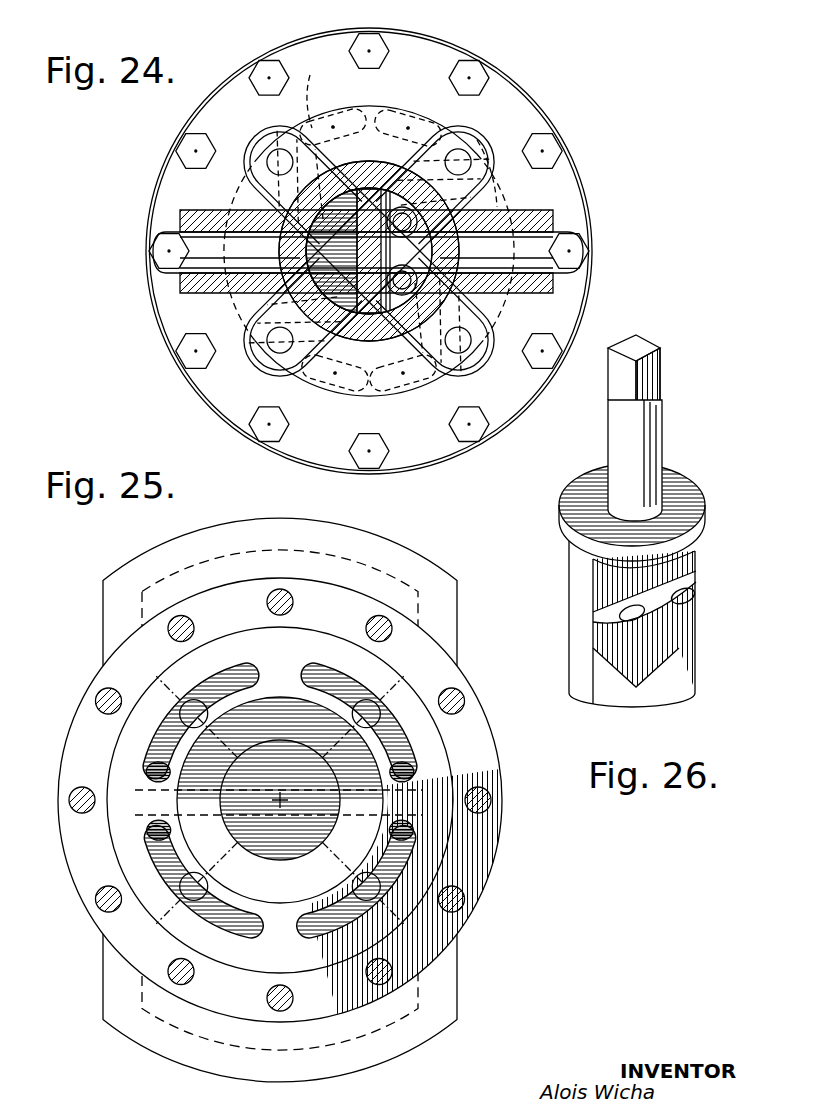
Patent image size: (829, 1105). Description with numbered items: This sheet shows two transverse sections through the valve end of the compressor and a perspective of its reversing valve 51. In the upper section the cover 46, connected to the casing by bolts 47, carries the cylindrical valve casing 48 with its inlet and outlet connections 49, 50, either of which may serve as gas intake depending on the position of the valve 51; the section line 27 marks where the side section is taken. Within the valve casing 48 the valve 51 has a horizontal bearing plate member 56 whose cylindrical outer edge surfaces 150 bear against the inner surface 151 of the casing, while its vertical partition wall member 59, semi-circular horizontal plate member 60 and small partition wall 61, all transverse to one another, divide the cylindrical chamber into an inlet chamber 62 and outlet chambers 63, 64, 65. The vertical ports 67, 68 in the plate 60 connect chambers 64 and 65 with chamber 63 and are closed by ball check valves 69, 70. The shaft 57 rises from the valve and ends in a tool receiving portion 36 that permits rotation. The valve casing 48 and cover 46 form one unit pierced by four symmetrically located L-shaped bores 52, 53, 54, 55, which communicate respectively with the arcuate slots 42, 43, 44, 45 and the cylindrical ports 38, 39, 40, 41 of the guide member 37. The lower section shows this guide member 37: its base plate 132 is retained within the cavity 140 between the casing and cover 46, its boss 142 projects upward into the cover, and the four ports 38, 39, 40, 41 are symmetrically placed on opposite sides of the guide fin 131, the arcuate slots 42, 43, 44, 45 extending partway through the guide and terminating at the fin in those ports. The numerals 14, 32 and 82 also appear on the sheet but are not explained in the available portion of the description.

In FIG. 25, the housing 14 is at (443, 970).
In FIG. 24, the section line 27 is at (228, 100).
In FIG. 24, the rotor plate 32 is at (298, 332).
In FIG. 26, the tool receiving portion 36 is at (655, 366).
In FIG. 25, the guide member 37 is at (433, 757).
In FIG. 25, the cylindrical port 38 is at (146, 833).
In FIG. 25, the cylindrical port 39 is at (145, 773).
In FIG. 25, the cylindrical port 40 is at (415, 774).
In FIG. 25, the cylindrical port 41 is at (415, 833).
In FIG. 24, the arcuate slot 42 is at (262, 302).
In FIG. 25, the arcuate slot 42 is at (222, 917).
In FIG. 24, the arcuate slot 43 is at (312, 88).
In FIG. 25, the arcuate slot 43 is at (243, 676).
In FIG. 24, the arcuate slot 44 is at (492, 205).
In FIG. 25, the arcuate slot 44 is at (392, 738).
In FIG. 24, the arcuate slot 45 is at (487, 305).
In FIG. 25, the arcuate slot 45 is at (317, 922).
In FIG. 24, the cover 46 is at (513, 100).
In FIG. 24, the bolts 47 is at (392, 48).
In FIG. 25, the bolts 47 is at (385, 617).
In FIG. 24, the valve casing 48 is at (372, 385).
In FIG. 24, the inlet and outlet connection 49 is at (197, 262).
In FIG. 24, the inlet and outlet connection 50 is at (548, 240).
In FIG. 24, the reversing valve 51 is at (303, 252).
In FIG. 26, the reversing valve 51 is at (572, 594).
In FIG. 25, the L-shaped bore 52 is at (233, 873).
In FIG. 24, the L-shaped bore 53 is at (274, 130).
In FIG. 25, the L-shaped bore 53 is at (235, 735).
In FIG. 24, the L-shaped bore 54 is at (412, 148).
In FIG. 25, the L-shaped bore 54 is at (330, 737).
In FIG. 24, the L-shaped bore 55 is at (409, 331).
In FIG. 25, the L-shaped bore 55 is at (322, 856).
In FIG. 26, the bearing plate member 56 is at (697, 510).
In FIG. 26, the shaft 57 is at (652, 440).
In FIG. 24, the vertical partition wall member 59 is at (360, 187).
In FIG. 26, the vertical partition wall member 59 is at (578, 618).
In FIG. 26, the semi-circular horizontal plate member 60 is at (698, 628).
In FIG. 26, the partition wall 61 is at (697, 688).
In FIG. 24, the inlet chamber 62 is at (326, 360).
In FIG. 26, the inlet chamber 62 is at (565, 568).
In FIG. 24, the outlet chamber 63 is at (421, 250).
In FIG. 26, the outlet chamber 63 is at (703, 578).
In FIG. 26, the outlet chamber 64 is at (631, 694).
In FIG. 26, the outlet chamber 65 is at (706, 657).
In FIG. 26, the vertical port 67 is at (678, 609).
In FIG. 26, the vertical port 68 is at (690, 595).
In FIG. 24, the check valve 69 is at (362, 340).
In FIG. 24, the check valve 70 is at (395, 205).
In FIG. 25, the shaft section 82 is at (279, 806).
In FIG. 25, the guide fin 131 is at (197, 838).
In FIG. 25, the guide base plate 132 is at (162, 905).
In FIG. 25, the cavity 140 is at (163, 935).
In FIG. 25, the boss 142 is at (157, 860).
In FIG. 26, the outer edge surfaces 150 is at (566, 532).
In FIG. 24, the inner surface 151 is at (285, 215).